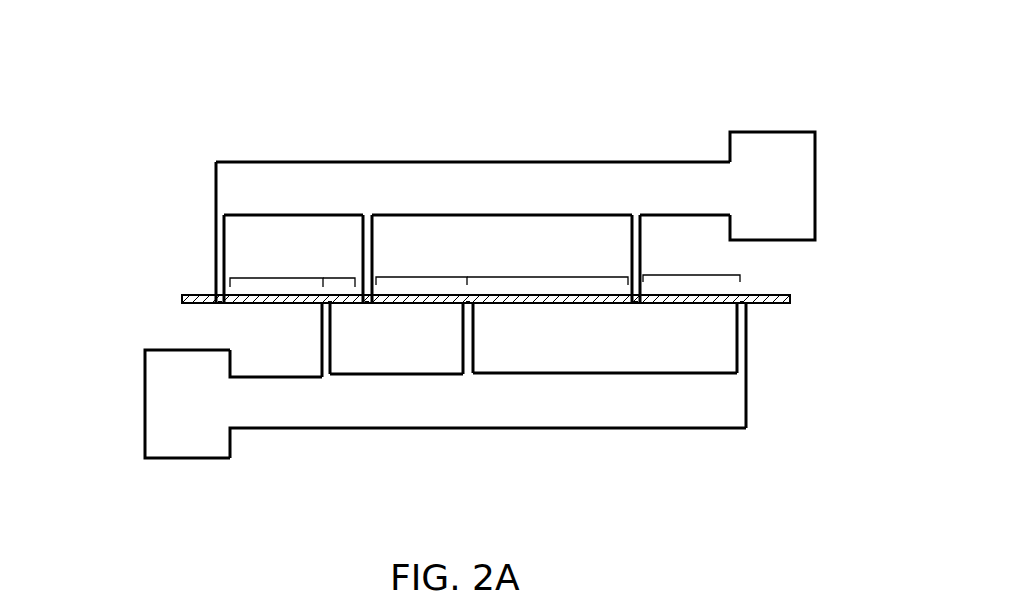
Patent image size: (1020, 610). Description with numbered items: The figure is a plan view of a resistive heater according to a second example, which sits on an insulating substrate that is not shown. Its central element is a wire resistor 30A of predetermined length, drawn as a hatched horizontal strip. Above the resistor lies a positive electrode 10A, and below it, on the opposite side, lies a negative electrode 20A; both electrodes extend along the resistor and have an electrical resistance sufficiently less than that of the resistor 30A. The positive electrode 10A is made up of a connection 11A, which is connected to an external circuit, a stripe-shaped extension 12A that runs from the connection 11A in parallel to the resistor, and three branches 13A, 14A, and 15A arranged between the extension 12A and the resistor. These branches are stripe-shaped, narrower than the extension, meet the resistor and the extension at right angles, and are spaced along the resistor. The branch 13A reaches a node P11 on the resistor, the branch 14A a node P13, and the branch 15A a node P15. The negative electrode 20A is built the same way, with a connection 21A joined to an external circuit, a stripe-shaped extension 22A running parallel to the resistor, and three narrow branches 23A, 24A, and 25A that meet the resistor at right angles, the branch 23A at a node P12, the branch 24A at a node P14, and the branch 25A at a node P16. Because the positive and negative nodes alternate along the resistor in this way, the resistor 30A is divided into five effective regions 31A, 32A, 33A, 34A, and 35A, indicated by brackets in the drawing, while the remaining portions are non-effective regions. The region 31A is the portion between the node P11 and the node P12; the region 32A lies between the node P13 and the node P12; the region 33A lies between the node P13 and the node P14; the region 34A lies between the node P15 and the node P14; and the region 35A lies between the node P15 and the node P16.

The positive electrode 10A is at (493, 161).
The connection 11A is at (773, 130).
The extension 12A is at (467, 162).
The branch 13A is at (220, 240).
The branch 14A is at (368, 250).
The branch 15A is at (637, 233).
The negative electrode 20A is at (500, 432).
The connection 21A is at (192, 460).
The extension 22A is at (467, 418).
The branch 23A is at (323, 340).
The branch 24A is at (470, 342).
The branch 25A is at (744, 343).
The wire resistor 30A is at (208, 297).
The effective region 31A is at (276, 267).
The effective region 32A is at (330, 267).
The effective region 33A is at (421, 266).
The effective region 34A is at (547, 266).
The effective region 35A is at (691, 264).
The node P11 is at (220, 306).
The node P12 is at (330, 306).
The node P13 is at (367, 306).
The node P14 is at (470, 306).
The node P15 is at (645, 304).
The node P16 is at (750, 305).